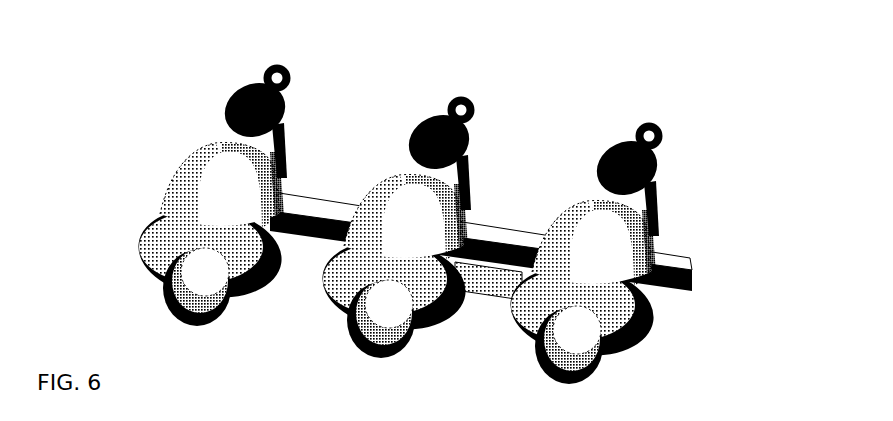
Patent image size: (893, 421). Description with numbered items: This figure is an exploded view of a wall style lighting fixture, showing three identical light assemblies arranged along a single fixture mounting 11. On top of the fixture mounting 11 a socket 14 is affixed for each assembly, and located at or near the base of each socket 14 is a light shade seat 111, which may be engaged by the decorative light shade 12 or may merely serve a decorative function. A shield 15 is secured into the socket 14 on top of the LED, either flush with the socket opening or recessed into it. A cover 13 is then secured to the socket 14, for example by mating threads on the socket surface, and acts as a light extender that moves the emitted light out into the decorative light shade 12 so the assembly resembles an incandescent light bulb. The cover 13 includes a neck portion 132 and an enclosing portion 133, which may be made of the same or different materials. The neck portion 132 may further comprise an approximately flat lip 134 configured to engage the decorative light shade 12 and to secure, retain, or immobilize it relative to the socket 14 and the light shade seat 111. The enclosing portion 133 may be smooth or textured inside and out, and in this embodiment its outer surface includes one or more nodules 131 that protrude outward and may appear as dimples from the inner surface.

The fixture mounting 11 is at (512, 241).
The decorative light shade 12 is at (169, 188).
The cover 13 is at (221, 299).
The socket 14 is at (590, 183).
The shield 15 is at (391, 156).
The light shade seat 111 is at (702, 125).
The nodules 131 is at (526, 360).
The neck portion 132 is at (596, 323).
The enclosing portion 133 is at (532, 340).
The lip 134 is at (486, 299).